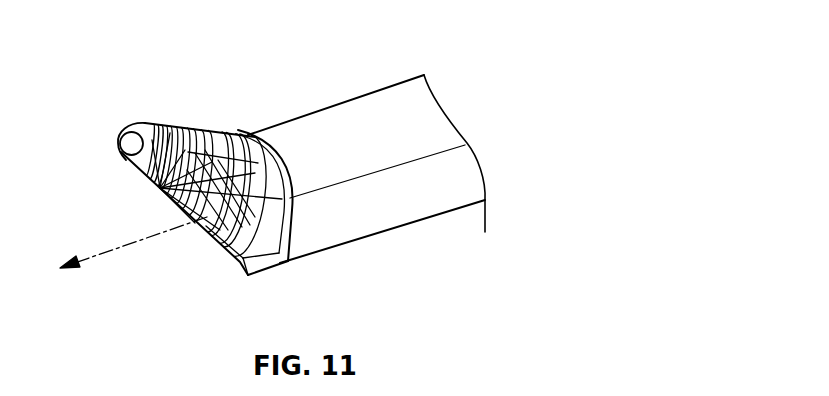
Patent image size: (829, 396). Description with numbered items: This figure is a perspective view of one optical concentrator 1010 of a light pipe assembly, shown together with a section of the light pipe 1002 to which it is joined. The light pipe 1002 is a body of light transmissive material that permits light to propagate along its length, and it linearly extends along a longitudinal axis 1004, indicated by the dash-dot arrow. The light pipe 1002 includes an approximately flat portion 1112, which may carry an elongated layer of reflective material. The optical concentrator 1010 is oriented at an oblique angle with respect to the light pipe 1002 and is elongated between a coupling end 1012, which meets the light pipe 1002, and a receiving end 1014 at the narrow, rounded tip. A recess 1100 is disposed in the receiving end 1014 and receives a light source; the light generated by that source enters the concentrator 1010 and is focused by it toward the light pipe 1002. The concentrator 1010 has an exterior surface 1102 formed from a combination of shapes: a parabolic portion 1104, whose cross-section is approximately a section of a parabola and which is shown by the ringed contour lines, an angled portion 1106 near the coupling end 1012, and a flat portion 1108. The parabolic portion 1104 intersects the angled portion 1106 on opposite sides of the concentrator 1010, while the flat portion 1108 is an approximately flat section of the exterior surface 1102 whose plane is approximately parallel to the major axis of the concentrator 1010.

The light pipe 1002 is at (378, 105).
The longitudinal axis 1004 is at (90, 263).
The optical concentrator 1010 is at (167, 104).
The coupling end 1012 is at (287, 238).
The receiving end 1014 is at (132, 125).
The recess 1100 is at (128, 147).
The exterior surface 1102 is at (212, 130).
The parabolic portion 1104 is at (241, 136).
The angled portion 1106 is at (237, 248).
The flat portion 1108 is at (183, 212).
The flat portion 1112 is at (427, 220).